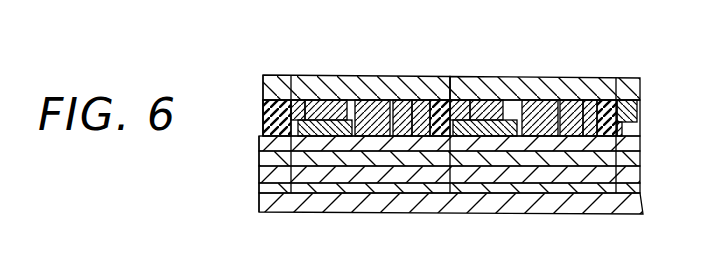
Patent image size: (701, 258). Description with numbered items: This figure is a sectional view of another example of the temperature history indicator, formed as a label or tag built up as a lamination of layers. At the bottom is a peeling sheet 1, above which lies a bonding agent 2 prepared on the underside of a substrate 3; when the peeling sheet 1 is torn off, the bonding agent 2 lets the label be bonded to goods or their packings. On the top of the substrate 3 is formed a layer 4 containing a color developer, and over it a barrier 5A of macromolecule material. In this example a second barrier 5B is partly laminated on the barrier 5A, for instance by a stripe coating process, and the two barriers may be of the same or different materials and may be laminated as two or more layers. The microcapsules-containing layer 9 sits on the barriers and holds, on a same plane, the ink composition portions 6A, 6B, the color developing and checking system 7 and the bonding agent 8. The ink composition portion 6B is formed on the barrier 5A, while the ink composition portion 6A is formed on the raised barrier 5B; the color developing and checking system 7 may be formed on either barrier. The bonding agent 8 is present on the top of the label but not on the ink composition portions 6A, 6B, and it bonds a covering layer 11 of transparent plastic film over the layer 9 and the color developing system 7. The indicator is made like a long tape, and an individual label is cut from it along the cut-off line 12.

The peeling sheet 1 is at (283, 207).
The bonding agent 2 is at (259, 191).
The substrate 3 is at (259, 177).
The layer containing a color developer 4 is at (259, 162).
The barrier 5A is at (259, 146).
The barrier 5B is at (422, 68).
The ink composition portion 6A is at (318, 100).
The ink composition portion 6B is at (375, 101).
The color developing and checking system 7 is at (441, 88).
The bonding agent 8 is at (355, 100).
The microcapsules-containing layer 9 is at (376, 68).
The covering layer 11 is at (262, 80).
The cut-off line 12 is at (452, 87).